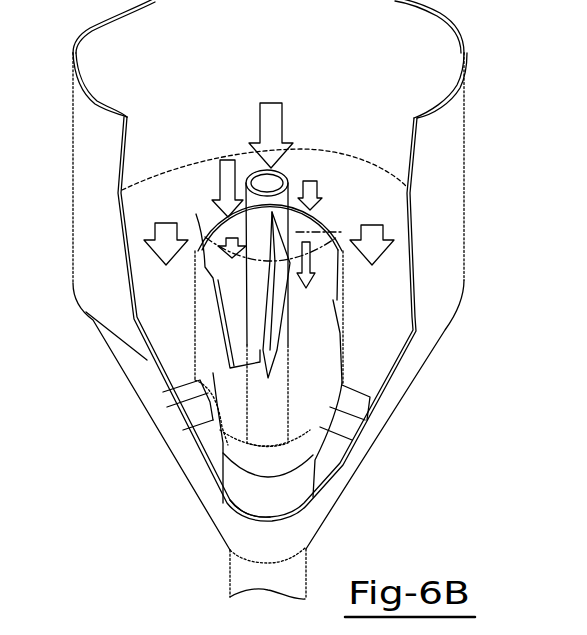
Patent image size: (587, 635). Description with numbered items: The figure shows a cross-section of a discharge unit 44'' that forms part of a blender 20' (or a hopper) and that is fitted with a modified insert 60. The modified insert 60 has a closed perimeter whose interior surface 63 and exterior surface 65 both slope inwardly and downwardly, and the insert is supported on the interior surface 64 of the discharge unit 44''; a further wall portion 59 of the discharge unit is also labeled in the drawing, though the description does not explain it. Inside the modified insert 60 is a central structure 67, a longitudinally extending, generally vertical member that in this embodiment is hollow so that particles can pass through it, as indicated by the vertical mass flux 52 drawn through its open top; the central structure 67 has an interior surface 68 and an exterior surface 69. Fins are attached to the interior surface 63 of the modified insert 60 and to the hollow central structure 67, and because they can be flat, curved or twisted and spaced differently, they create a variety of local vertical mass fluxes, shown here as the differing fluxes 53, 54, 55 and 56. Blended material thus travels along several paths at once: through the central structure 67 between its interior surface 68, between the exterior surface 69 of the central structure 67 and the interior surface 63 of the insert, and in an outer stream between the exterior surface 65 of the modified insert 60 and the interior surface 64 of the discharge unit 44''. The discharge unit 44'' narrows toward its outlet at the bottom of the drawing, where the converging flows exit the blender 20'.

The blender 20' is at (244, 299).
The discharge unit 44'' is at (431, 517).
The vertical mass flux 52 is at (268, 100).
The vertical mass flux 53 is at (317, 195).
The vertical mass flux 54 is at (320, 233).
The vertical mass flux 55 is at (221, 210).
The vertical mass flux 56 is at (220, 238).
The funnel wall 59 is at (147, 380).
The modified insert 60 is at (343, 330).
The interior surface 63 is at (318, 382).
The interior surface 64 is at (210, 456).
The exterior surface 65 is at (335, 370).
The central structure 67 is at (280, 188).
The interior surface 68 is at (265, 182).
The exterior surface 69 is at (292, 197).